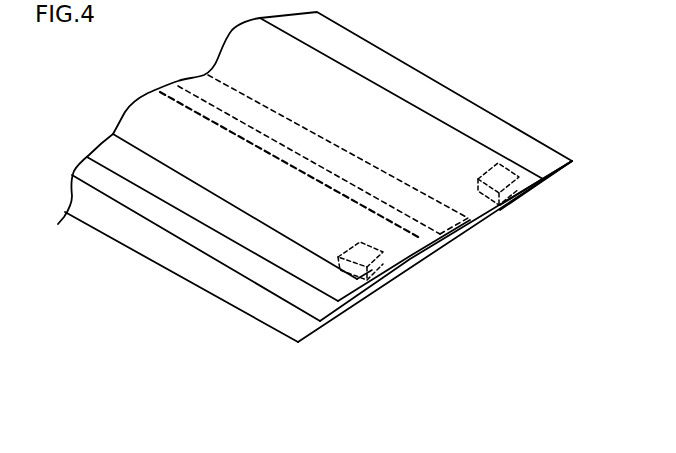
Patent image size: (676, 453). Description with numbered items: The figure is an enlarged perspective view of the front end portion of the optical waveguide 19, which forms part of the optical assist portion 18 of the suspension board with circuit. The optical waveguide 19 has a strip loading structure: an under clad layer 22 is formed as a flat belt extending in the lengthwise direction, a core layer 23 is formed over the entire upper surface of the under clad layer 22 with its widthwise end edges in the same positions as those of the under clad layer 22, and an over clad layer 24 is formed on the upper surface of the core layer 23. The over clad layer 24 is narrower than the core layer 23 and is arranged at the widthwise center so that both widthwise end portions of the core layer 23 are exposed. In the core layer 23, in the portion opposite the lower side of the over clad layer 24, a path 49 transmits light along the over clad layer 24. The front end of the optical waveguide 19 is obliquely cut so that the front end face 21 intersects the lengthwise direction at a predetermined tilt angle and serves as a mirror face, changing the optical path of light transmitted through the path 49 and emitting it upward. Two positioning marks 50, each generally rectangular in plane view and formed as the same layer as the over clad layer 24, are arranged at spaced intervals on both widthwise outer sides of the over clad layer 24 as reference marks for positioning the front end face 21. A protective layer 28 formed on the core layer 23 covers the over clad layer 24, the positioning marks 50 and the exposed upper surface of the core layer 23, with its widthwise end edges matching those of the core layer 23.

The optical waveguide 19 is at (207, 225).
The optical assist portion 18 is at (207, 169).
The protective layer 28 is at (433, 97).
The over clad layer 24 is at (353, 157).
The path 49 is at (207, 122).
The positioning marks 50 is at (340, 247).
The front end face 21 is at (396, 283).
The under clad layer 22 is at (343, 322).
The core layer 23 is at (538, 187).